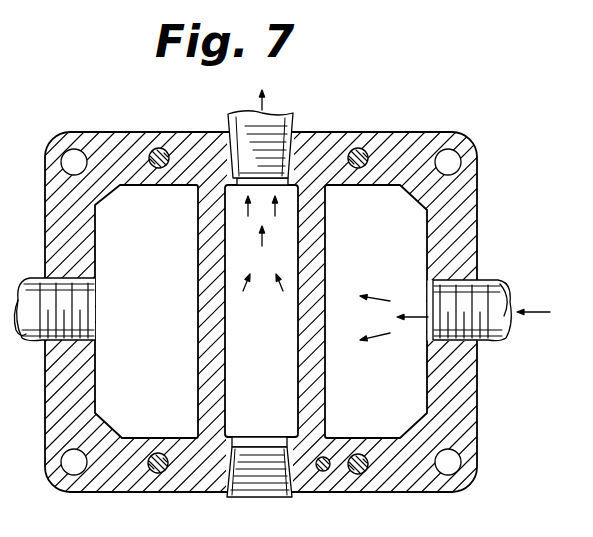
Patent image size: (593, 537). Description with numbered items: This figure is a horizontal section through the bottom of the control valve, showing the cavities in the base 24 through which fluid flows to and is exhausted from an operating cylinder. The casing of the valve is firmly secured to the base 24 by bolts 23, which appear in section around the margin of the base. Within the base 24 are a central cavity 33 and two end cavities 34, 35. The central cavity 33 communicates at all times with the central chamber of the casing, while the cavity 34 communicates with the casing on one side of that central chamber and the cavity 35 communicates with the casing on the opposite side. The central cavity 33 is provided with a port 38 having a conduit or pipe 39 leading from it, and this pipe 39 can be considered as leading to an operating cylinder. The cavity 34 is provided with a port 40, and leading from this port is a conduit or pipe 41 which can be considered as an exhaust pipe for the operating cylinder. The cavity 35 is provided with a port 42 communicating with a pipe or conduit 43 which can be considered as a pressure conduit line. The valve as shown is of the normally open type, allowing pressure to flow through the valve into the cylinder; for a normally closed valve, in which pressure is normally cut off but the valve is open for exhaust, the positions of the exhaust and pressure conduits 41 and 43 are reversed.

The bolts 23 is at (162, 148).
The base 24 is at (470, 145).
The central cavity 33 is at (290, 252).
The end cavity 34 is at (108, 385).
The end cavity 35 is at (423, 228).
The port 38 is at (281, 188).
The conduit or pipe 39 is at (291, 117).
The port 40 is at (95, 333).
The conduit or pipe 41 is at (46, 264).
The port 42 is at (428, 292).
The pipe or conduit 43 is at (497, 282).